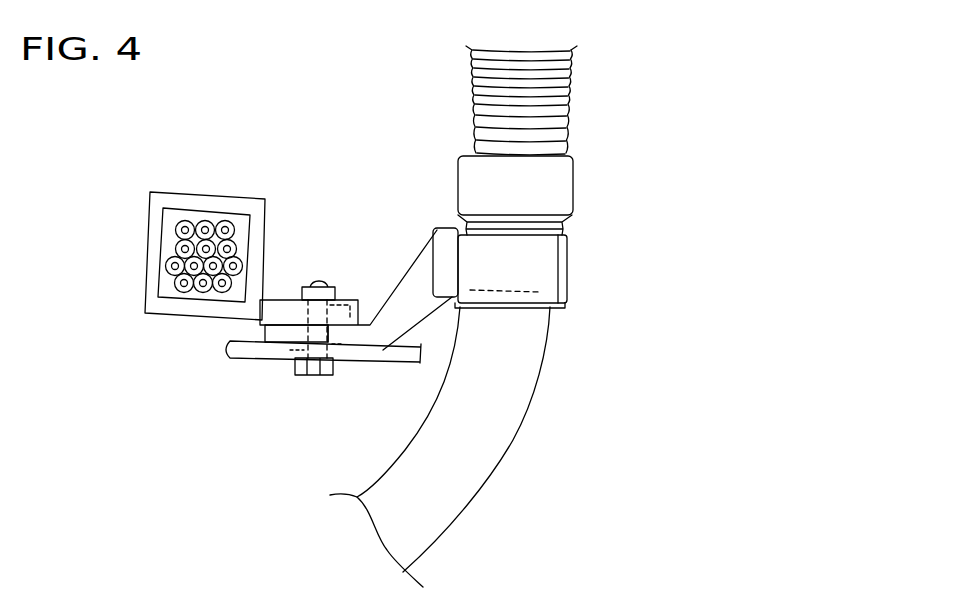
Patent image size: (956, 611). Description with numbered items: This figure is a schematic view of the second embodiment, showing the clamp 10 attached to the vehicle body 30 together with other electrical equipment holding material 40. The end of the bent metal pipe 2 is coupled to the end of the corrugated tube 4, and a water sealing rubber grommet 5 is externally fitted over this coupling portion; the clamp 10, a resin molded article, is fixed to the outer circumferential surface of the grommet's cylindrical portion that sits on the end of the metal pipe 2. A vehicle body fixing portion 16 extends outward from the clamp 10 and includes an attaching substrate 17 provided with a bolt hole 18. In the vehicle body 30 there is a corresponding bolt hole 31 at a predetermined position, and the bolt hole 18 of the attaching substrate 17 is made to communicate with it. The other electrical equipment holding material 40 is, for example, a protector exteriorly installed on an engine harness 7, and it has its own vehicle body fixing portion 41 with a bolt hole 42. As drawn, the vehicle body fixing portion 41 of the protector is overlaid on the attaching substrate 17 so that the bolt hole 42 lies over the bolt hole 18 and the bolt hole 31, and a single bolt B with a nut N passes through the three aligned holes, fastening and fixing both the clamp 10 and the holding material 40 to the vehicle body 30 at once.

The metal pipe 2 is at (492, 413).
The corrugated tube 4 is at (565, 85).
The grommet 5 is at (592, 192).
The clamp 10 is at (583, 278).
The other electrical equipment holding material 40 is at (197, 192).
The engine harness 7 is at (163, 278).
The vehicle body fixing portion 41 is at (278, 307).
The bolt hole 42 is at (333, 313).
The nut N is at (310, 292).
The bolt B is at (316, 355).
The vehicle body fixing portion 16 is at (252, 327).
The attaching substrate 17 is at (363, 334).
The bolt hole 18 is at (338, 344).
The vehicle body 30 is at (250, 352).
The bolt hole 31 is at (297, 350).